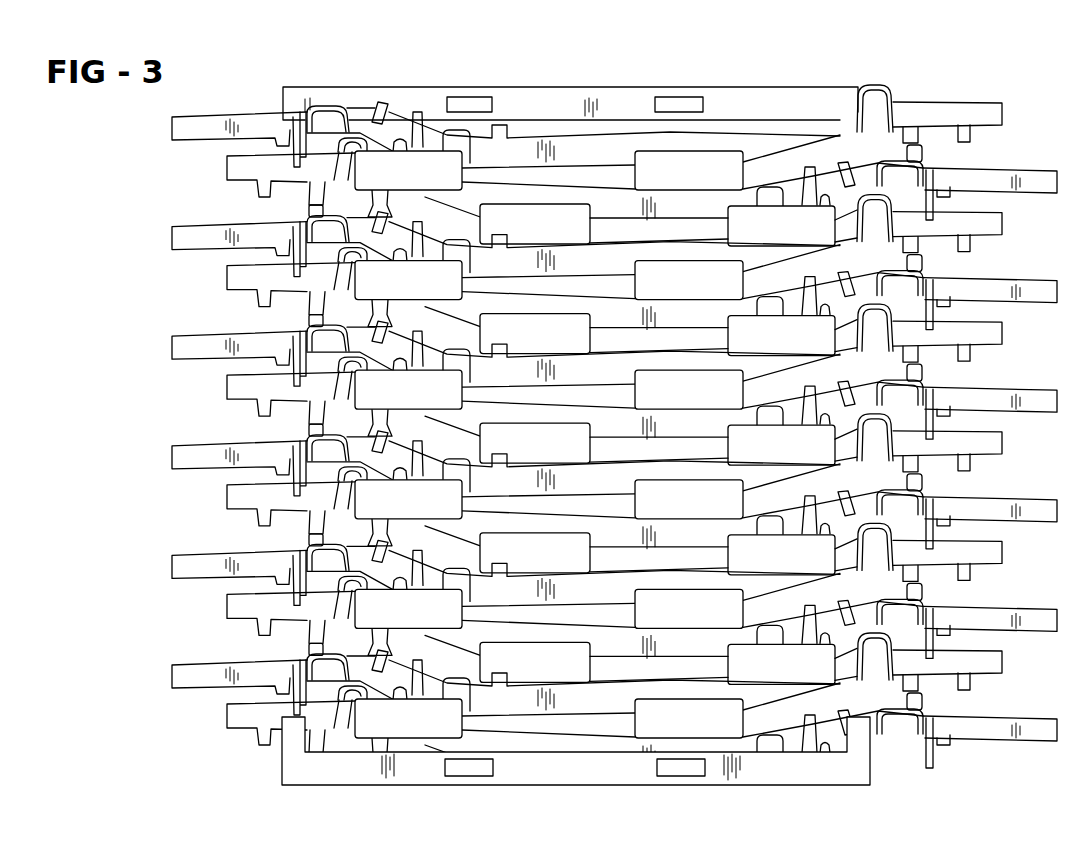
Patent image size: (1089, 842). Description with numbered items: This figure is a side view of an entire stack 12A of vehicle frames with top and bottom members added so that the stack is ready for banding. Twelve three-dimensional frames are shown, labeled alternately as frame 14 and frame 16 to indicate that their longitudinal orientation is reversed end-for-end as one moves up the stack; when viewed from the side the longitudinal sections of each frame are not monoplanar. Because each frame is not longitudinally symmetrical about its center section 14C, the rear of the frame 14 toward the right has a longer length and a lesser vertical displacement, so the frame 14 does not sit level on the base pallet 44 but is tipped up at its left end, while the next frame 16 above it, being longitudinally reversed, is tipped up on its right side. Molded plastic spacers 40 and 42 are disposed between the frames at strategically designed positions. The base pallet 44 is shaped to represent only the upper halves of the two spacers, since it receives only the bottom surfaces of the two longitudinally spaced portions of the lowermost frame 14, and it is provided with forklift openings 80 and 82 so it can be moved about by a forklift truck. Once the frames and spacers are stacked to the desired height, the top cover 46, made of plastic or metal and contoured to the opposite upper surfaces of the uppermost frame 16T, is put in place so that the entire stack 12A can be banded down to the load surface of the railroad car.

The stack 12A is at (757, 86).
The top cover 46 is at (636, 87).
The uppermost frame 16T is at (242, 112).
The frame 16 is at (205, 555).
The frame 14 is at (228, 612).
The spacer 40 is at (407, 738).
The spacer 42 is at (712, 723).
The base plate 14C is at (557, 722).
The base pallet 44 is at (873, 768).
The forklift opening 80 is at (465, 772).
The forklift opening 82 is at (672, 770).